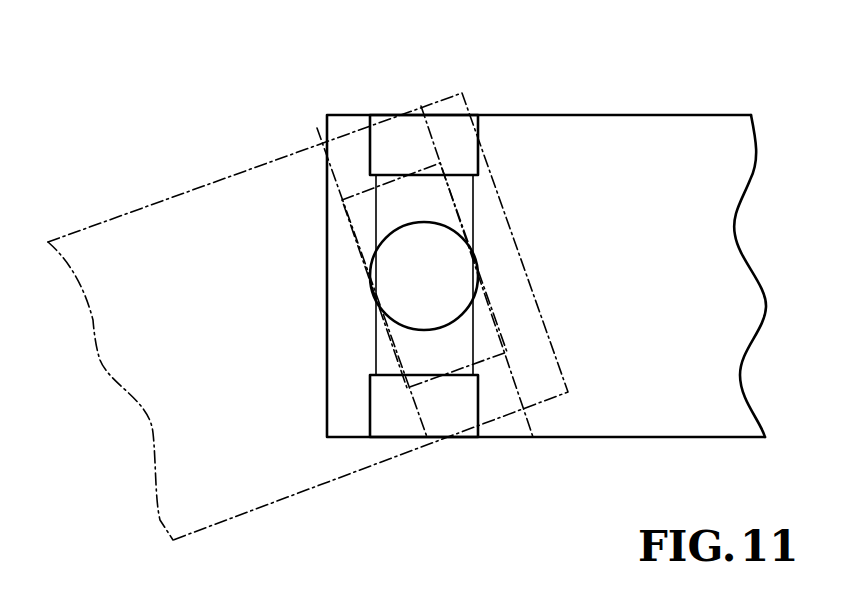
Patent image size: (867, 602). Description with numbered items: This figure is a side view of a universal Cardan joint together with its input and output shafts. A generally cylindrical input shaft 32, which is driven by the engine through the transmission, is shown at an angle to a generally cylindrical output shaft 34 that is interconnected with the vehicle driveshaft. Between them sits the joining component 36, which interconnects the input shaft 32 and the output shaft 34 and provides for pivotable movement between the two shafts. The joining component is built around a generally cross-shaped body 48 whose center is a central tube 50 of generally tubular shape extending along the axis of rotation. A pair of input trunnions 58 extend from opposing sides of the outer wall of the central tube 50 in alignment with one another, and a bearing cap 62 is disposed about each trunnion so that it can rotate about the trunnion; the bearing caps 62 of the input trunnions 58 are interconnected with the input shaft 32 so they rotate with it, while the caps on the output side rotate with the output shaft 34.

The input shaft 32 is at (175, 225).
The output shaft 34 is at (688, 143).
The joining component 36 is at (370, 108).
The body 48 is at (474, 108).
The central tube 50 is at (478, 271).
The input trunnions 58 is at (363, 221).
The bearing cap 62 is at (317, 128).